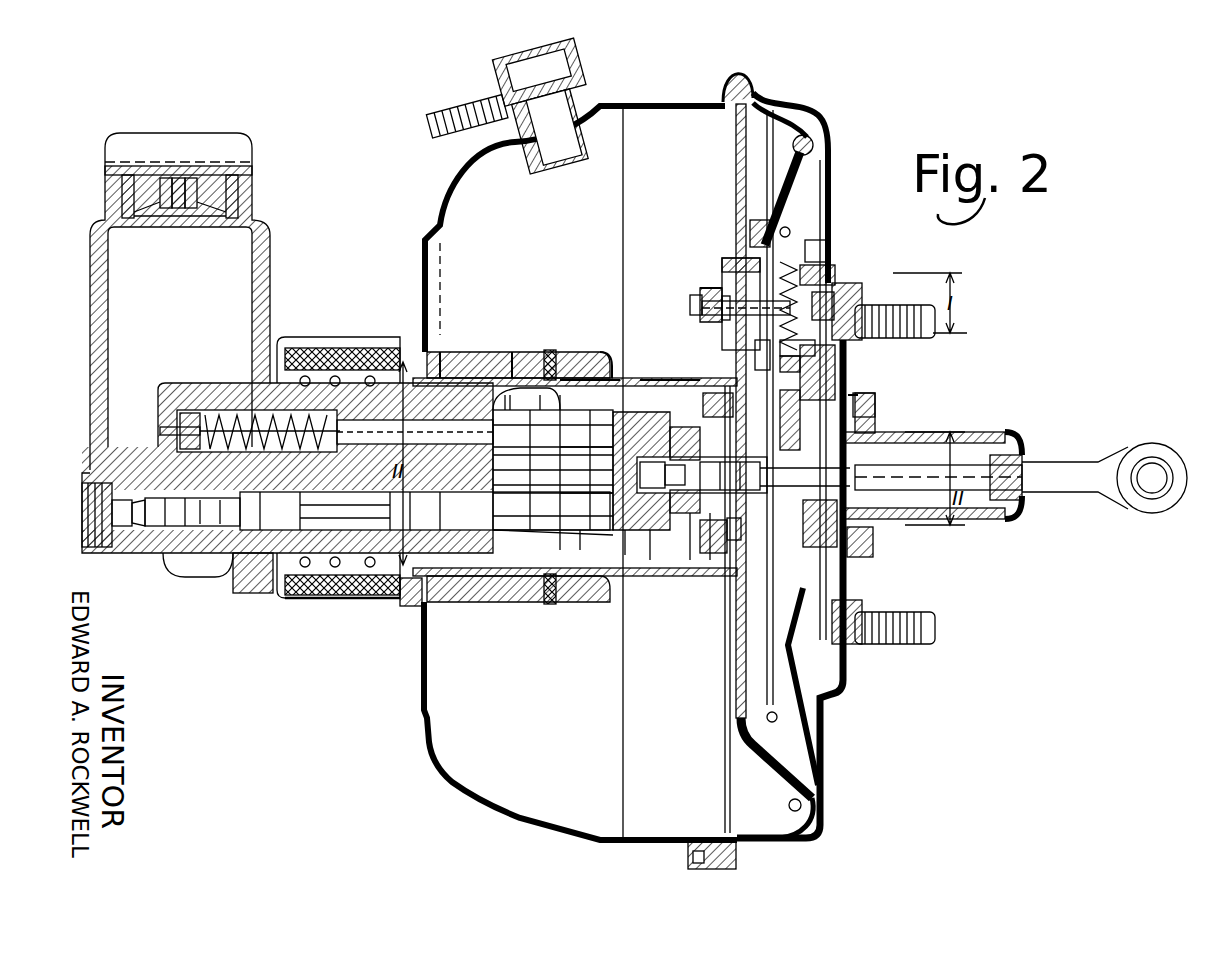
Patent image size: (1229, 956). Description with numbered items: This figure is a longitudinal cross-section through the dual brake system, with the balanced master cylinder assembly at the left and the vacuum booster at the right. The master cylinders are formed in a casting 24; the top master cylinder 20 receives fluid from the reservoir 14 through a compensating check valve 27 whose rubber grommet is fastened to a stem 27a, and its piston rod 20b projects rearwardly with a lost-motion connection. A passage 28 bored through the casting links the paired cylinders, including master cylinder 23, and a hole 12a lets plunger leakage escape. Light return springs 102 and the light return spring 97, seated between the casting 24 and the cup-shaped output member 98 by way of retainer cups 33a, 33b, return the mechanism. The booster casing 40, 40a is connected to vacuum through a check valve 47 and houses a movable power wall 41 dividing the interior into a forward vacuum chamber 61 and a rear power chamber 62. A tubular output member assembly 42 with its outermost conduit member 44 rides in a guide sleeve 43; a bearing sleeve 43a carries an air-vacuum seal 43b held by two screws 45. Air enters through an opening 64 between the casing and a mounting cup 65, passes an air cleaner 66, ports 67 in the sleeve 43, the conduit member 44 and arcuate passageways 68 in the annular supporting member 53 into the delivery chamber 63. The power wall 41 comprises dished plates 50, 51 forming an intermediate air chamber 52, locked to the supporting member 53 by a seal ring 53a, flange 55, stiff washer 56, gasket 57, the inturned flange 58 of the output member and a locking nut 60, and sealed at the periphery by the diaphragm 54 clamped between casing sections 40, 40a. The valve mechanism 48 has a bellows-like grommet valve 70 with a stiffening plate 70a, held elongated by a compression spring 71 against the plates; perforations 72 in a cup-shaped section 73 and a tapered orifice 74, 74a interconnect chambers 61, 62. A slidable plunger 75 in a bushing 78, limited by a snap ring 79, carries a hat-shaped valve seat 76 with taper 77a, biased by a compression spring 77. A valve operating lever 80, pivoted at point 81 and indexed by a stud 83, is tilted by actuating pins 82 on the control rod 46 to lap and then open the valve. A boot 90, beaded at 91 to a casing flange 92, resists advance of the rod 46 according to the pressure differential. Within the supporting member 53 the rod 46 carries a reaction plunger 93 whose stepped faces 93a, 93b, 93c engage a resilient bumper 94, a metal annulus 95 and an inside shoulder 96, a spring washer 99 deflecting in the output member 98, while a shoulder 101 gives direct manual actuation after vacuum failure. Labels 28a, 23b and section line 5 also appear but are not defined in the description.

The reservoir 14 is at (190, 305).
The master cylinder 20 is at (250, 405).
The compensating check valve 27 is at (170, 410).
The valve stem 28a is at (175, 446).
The hole 12a is at (82, 515).
The casting 24 is at (125, 553).
The passage 28 is at (220, 514).
The stem 27a is at (425, 511).
The master cylinder 23 is at (258, 562).
The light return springs 102 is at (336, 350).
The air cleaner 66 is at (342, 600).
The mounting cup 65 is at (322, 600).
The ports 67 is at (298, 602).
The opening 64 is at (415, 618).
The casing 40 is at (425, 200).
The casing section 40a is at (884, 134).
The check valve 47 is at (590, 80).
The guide sleeve 43 is at (518, 465).
The bearing sleeve 43a is at (537, 329).
The air vacuum seal 43b is at (494, 334).
The screws 45 is at (548, 350).
The conduit member 44 is at (612, 362).
The piston rod 20b is at (608, 356).
The tubular output member assembly 42 is at (656, 368).
The retainer cup 33a is at (596, 494).
The retainer cup 33b is at (510, 624).
The spring washer 99 is at (620, 414).
The resilient bumper 94 is at (609, 401).
The section line 5 is at (545, 552).
The passage 23b is at (597, 569).
The light return spring 97 is at (586, 578).
The cup-shaped output member 98 is at (634, 568).
The metal annulus 95 is at (690, 470).
The reaction plunger 93 is at (709, 464).
The inside shoulder 96 is at (680, 449).
The first face 93a is at (662, 626).
The second face 93b is at (717, 626).
The third face 93c is at (733, 536).
The inturned flange 58 is at (753, 539).
The locking nut 60 is at (716, 559).
The arcuate passageways 68 is at (751, 420).
The shoulder 101 is at (838, 512).
The forward power wall plate 50 is at (725, 692).
The movable power wall 41 is at (760, 752).
The flexible annular diaphragm 54 is at (758, 830).
The rear power wall plate 51 is at (815, 693).
The stiff washer 56 is at (761, 407).
The gasket 57 is at (758, 405).
The flange 55 is at (810, 586).
The pivot point 81 is at (873, 545).
The power chamber 62 is at (823, 672).
The vacuum chamber 61 is at (533, 712).
The intermediate air chamber 52 is at (800, 608).
The valve mechanism 48 is at (700, 251).
The perforations 72 is at (712, 286).
The cup-shaped section 73 is at (690, 300).
The slidable plunger 75 is at (702, 310).
The snap ring 79 is at (702, 300).
The bushing 78 is at (748, 258).
The grommet valve 70 is at (752, 230).
The stiffening annular plate 70a is at (877, 209).
The compression spring 71 is at (792, 232).
The orifice 74 is at (800, 270).
The compression spring 77 is at (830, 252).
The valve seat 76 is at (836, 272).
The taper 77a is at (897, 311).
The valve operating lever 80 is at (862, 292).
The taper 74a is at (815, 350).
The delivery chamber 63 is at (765, 360).
The annular supporting member 53 is at (792, 368).
The seal ring 53a is at (897, 379).
The stud 83 is at (876, 418).
The flange 92 is at (866, 400).
The bead 91 is at (870, 388).
The actuating pins 82 is at (856, 458).
The boot 90 is at (972, 520).
The control rod 46 is at (1050, 493).